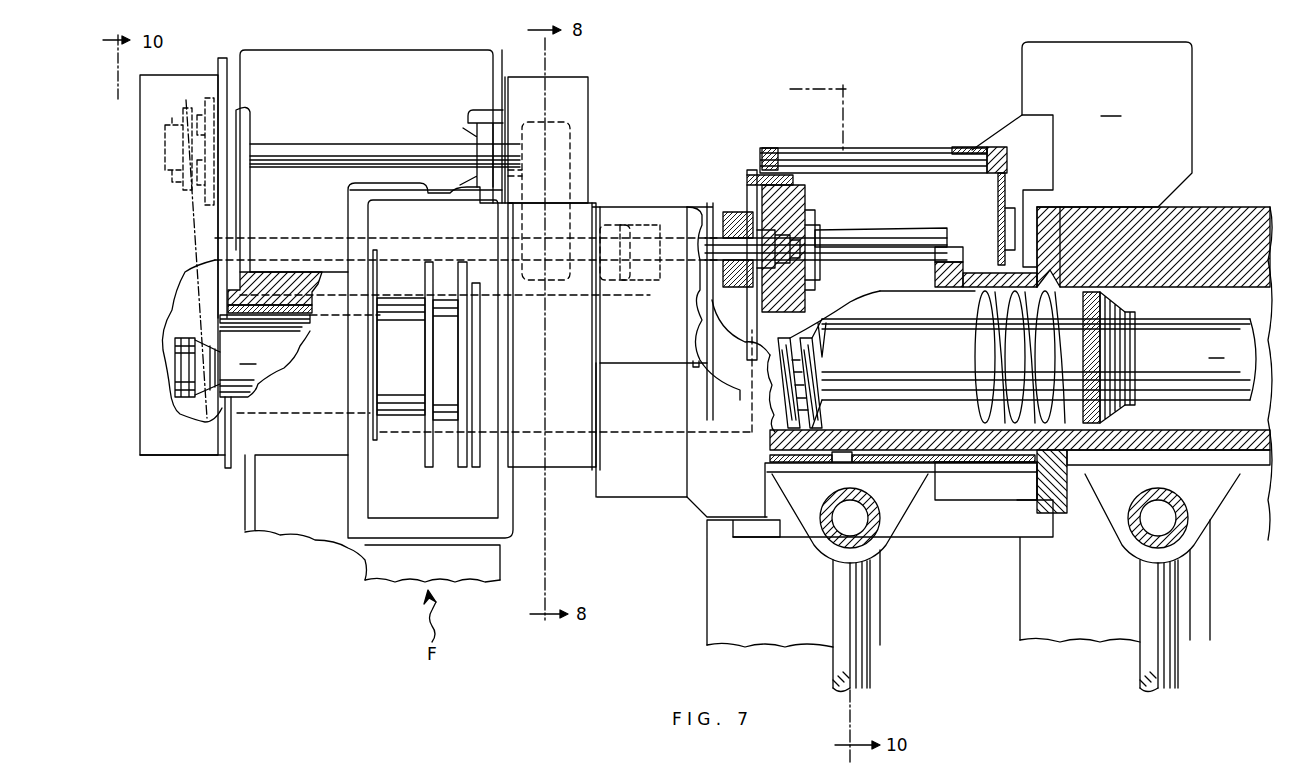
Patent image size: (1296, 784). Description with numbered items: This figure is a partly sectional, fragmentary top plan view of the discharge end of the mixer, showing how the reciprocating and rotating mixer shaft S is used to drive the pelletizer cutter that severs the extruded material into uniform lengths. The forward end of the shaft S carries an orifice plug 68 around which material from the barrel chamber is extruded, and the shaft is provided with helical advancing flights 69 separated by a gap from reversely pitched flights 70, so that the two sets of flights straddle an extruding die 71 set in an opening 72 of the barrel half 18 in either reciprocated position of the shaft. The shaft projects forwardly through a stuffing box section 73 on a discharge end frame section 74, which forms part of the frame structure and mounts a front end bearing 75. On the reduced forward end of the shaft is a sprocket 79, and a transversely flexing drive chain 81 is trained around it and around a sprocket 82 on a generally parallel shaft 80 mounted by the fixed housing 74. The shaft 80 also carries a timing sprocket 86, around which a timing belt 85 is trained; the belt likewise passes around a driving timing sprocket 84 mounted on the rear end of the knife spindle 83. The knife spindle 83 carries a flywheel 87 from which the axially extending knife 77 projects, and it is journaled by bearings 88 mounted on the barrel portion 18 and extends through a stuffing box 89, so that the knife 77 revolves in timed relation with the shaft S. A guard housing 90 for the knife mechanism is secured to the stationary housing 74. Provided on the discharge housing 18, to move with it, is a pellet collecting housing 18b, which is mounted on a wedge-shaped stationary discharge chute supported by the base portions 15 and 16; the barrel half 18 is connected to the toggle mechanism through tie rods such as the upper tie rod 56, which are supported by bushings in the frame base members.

The base portion 15 is at (1024, 624).
The base portion 16 is at (880, 626).
The barrel half 18 is at (1062, 210).
The pellet collecting housing 18b is at (978, 148).
The upper tie rod 56 is at (870, 676).
The orifice plug 68 is at (1104, 312).
The helical advancing flights 69 is at (985, 302).
The reversely pitched flights 70 is at (818, 418).
The extruding die 71 is at (956, 262).
The opening 72 is at (978, 275).
The stuffing box section 73 is at (565, 456).
The discharge end frame section 74 is at (352, 526).
The front end bearing 75 is at (296, 302).
The knife 77 is at (870, 248).
The sprocket 79 is at (198, 406).
The shaft 80 is at (383, 150).
The drive chain 81 is at (184, 226).
The sprocket 82 is at (182, 115).
The knife spindle 83 is at (714, 220).
The driving timing sprocket 84 is at (588, 280).
The timing belt 85 is at (575, 197).
The timing sprocket 86 is at (575, 135).
The flywheel 87 is at (805, 190).
The bearings 88 is at (670, 218).
The stuffing box 89 is at (730, 210).
The guard housing 90 is at (574, 111).